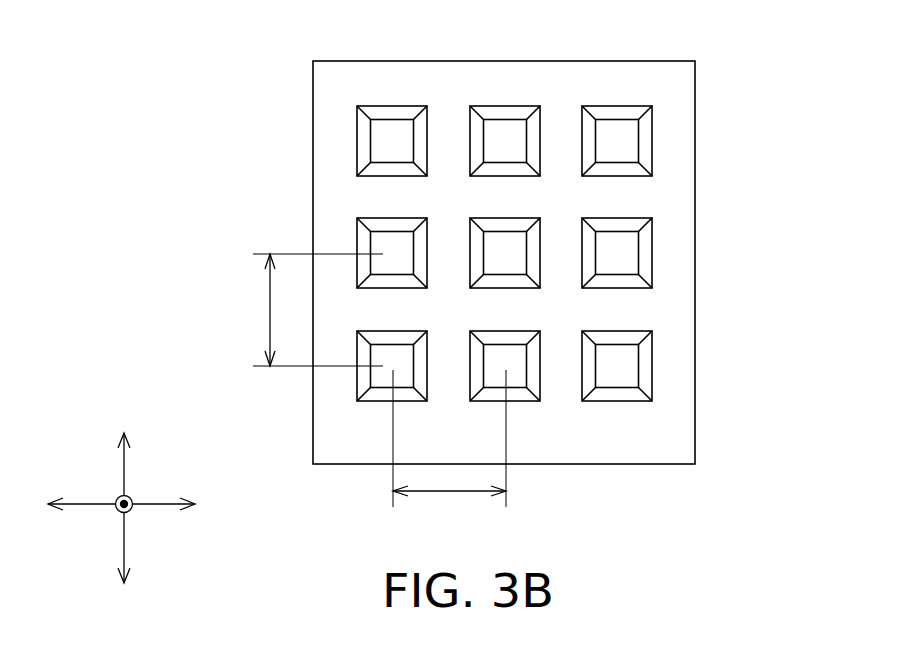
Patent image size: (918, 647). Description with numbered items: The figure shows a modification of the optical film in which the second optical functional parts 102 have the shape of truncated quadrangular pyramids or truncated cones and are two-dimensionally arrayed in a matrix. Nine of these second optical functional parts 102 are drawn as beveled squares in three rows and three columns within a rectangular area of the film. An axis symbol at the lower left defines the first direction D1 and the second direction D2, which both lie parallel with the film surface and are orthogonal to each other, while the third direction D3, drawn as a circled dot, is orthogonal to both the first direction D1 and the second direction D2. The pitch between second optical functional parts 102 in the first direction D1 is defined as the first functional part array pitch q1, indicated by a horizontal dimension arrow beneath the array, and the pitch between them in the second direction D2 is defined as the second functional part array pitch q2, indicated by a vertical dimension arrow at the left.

The second optical functional parts 102 is at (422, 246).
The first functional part array pitch q1 is at (449, 446).
The second functional part array pitch q2 is at (309, 310).
The first direction D1 is at (168, 504).
The second direction D2 is at (124, 462).
The third direction D3 is at (120, 512).